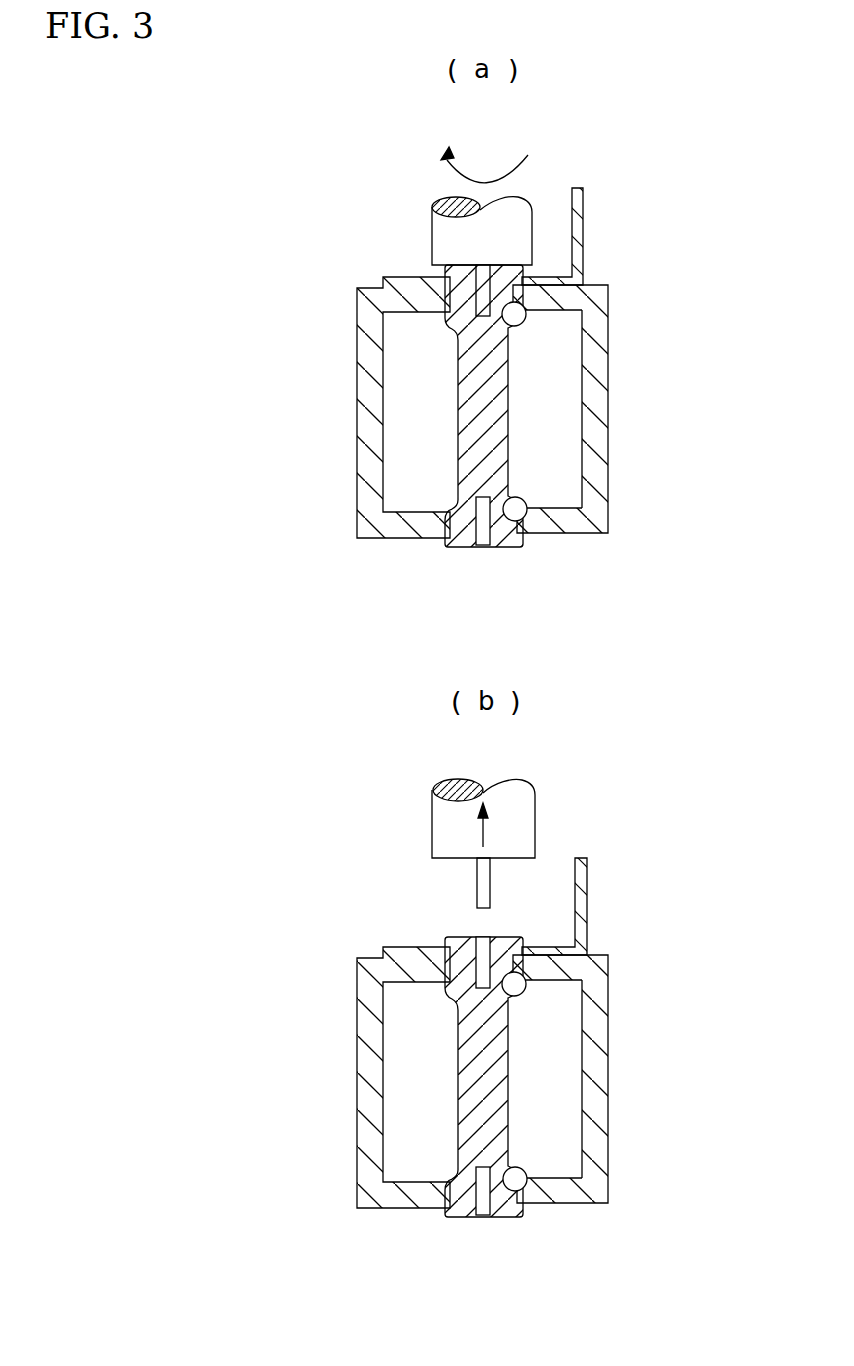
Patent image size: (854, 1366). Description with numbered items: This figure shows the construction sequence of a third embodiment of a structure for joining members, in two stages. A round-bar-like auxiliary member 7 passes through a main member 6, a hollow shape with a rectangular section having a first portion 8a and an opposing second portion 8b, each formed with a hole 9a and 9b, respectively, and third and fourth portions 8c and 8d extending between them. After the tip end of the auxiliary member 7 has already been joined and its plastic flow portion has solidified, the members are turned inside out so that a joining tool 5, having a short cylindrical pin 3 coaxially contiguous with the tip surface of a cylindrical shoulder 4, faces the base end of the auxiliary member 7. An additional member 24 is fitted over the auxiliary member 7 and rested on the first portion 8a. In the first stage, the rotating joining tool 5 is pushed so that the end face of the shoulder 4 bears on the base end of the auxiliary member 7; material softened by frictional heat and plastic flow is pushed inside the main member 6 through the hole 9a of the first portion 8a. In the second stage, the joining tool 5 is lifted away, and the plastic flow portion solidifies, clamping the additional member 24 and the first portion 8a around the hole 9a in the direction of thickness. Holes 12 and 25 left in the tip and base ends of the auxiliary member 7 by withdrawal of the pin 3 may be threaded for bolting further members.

The pin 3 is at (450, 328).
The shoulder 4 is at (450, 229).
The joining tool 5 is at (533, 199).
The main member 6 is at (618, 303).
The auxiliary member 7 is at (478, 428).
The first portion 8a is at (545, 298).
The second portion 8b is at (572, 540).
The third portion 8c is at (368, 390).
The fourth portion 8d is at (597, 402).
The hole 9a is at (508, 328).
The hole 9b is at (513, 496).
The hole 12 is at (483, 548).
The additional member 24 is at (583, 203).
The hole 25 is at (480, 950).